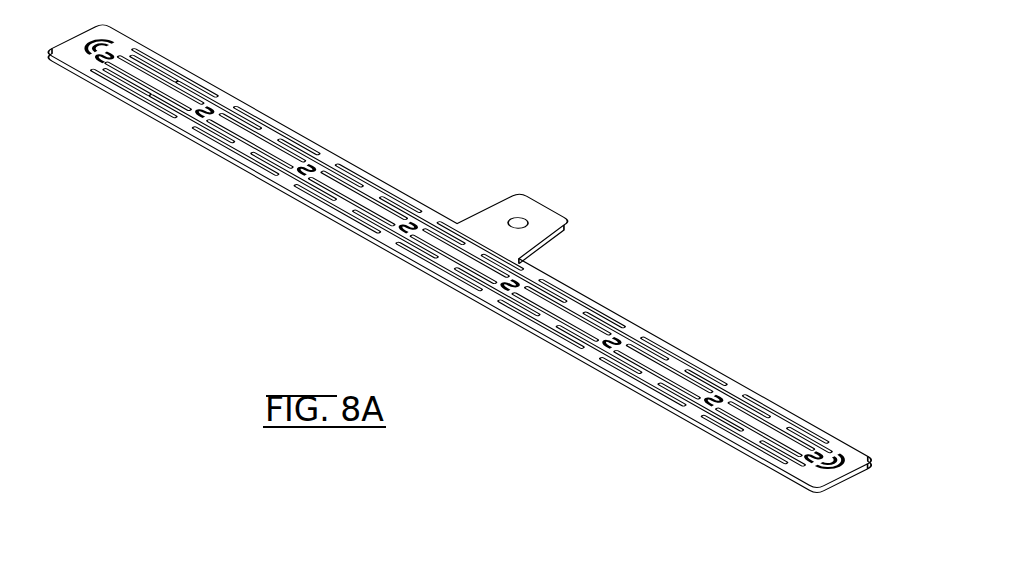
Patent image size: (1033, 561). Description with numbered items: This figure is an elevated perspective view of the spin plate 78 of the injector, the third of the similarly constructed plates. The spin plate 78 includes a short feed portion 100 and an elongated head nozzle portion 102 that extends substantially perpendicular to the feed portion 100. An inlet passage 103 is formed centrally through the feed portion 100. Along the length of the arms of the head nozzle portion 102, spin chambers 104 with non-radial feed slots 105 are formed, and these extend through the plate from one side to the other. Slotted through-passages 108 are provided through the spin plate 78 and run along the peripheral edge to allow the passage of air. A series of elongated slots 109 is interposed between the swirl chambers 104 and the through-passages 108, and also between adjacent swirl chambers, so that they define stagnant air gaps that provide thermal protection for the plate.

The spin plate 78 is at (638, 327).
The feed portion 100 is at (573, 223).
The head nozzle portion 102 is at (614, 381).
The inlet passage 103 is at (527, 217).
The spin chamber 104 is at (511, 268).
The non-radial feed slot 105 is at (474, 294).
The slotted through-passage 108 is at (110, 82).
The elongated slot 109 is at (160, 78).